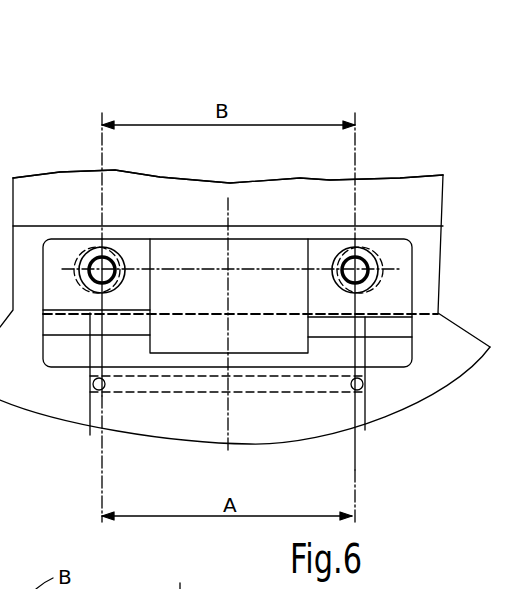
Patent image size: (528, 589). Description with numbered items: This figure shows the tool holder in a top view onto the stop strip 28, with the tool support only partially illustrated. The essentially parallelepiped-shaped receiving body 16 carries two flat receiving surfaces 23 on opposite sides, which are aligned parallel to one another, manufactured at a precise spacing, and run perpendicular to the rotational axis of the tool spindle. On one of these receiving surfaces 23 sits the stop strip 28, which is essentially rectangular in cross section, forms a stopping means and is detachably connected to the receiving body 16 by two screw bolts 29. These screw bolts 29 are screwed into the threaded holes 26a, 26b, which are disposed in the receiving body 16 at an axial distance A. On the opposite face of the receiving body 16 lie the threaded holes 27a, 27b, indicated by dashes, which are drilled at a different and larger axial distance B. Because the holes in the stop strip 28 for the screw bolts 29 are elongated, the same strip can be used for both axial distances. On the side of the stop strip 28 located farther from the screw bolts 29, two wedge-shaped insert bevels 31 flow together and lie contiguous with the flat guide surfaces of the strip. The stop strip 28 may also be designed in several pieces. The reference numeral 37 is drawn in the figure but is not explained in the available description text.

The receiving body 16 is at (427, 190).
The receiving surface 23 is at (425, 287).
The threaded hole 26a is at (128, 278).
The threaded hole 26b is at (328, 278).
The threaded hole 27a is at (82, 255).
The threaded hole 27b is at (377, 250).
The stop strip 28 is at (397, 257).
The screw bolt 29 is at (113, 246).
The insert bevel 31 is at (62, 363).
The bar 37 is at (185, 390).